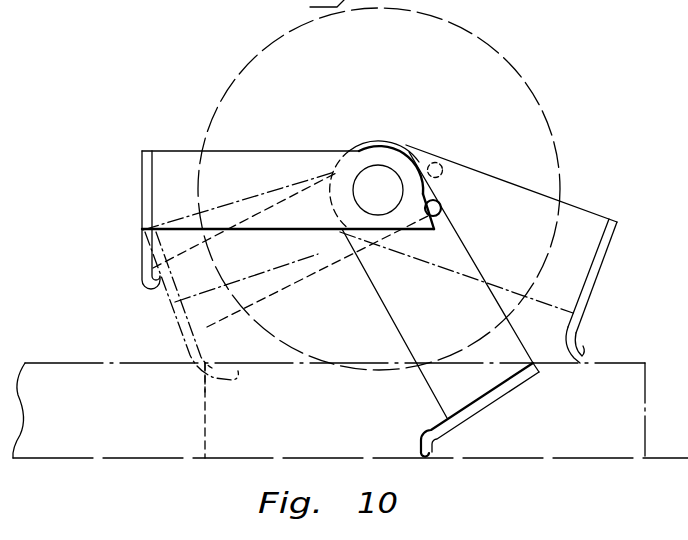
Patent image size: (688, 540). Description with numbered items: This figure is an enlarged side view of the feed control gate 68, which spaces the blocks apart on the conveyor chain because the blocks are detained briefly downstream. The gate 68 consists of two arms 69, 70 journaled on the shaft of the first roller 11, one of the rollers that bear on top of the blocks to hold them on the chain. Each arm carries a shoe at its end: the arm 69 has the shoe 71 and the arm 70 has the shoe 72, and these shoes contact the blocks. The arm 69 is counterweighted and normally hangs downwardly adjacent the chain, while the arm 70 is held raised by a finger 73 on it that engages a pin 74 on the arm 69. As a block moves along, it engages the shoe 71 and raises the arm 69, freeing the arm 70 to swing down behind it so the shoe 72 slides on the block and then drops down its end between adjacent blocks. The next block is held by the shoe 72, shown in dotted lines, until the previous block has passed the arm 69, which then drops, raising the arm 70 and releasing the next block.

The roller 11 is at (533, 178).
The gate 68 is at (434, 216).
The arm 69 is at (447, 370).
The arm 70 is at (288, 185).
The shoe 71 is at (426, 445).
The shoe 72 is at (146, 276).
The finger 73 is at (443, 166).
The pin 74 is at (428, 214).